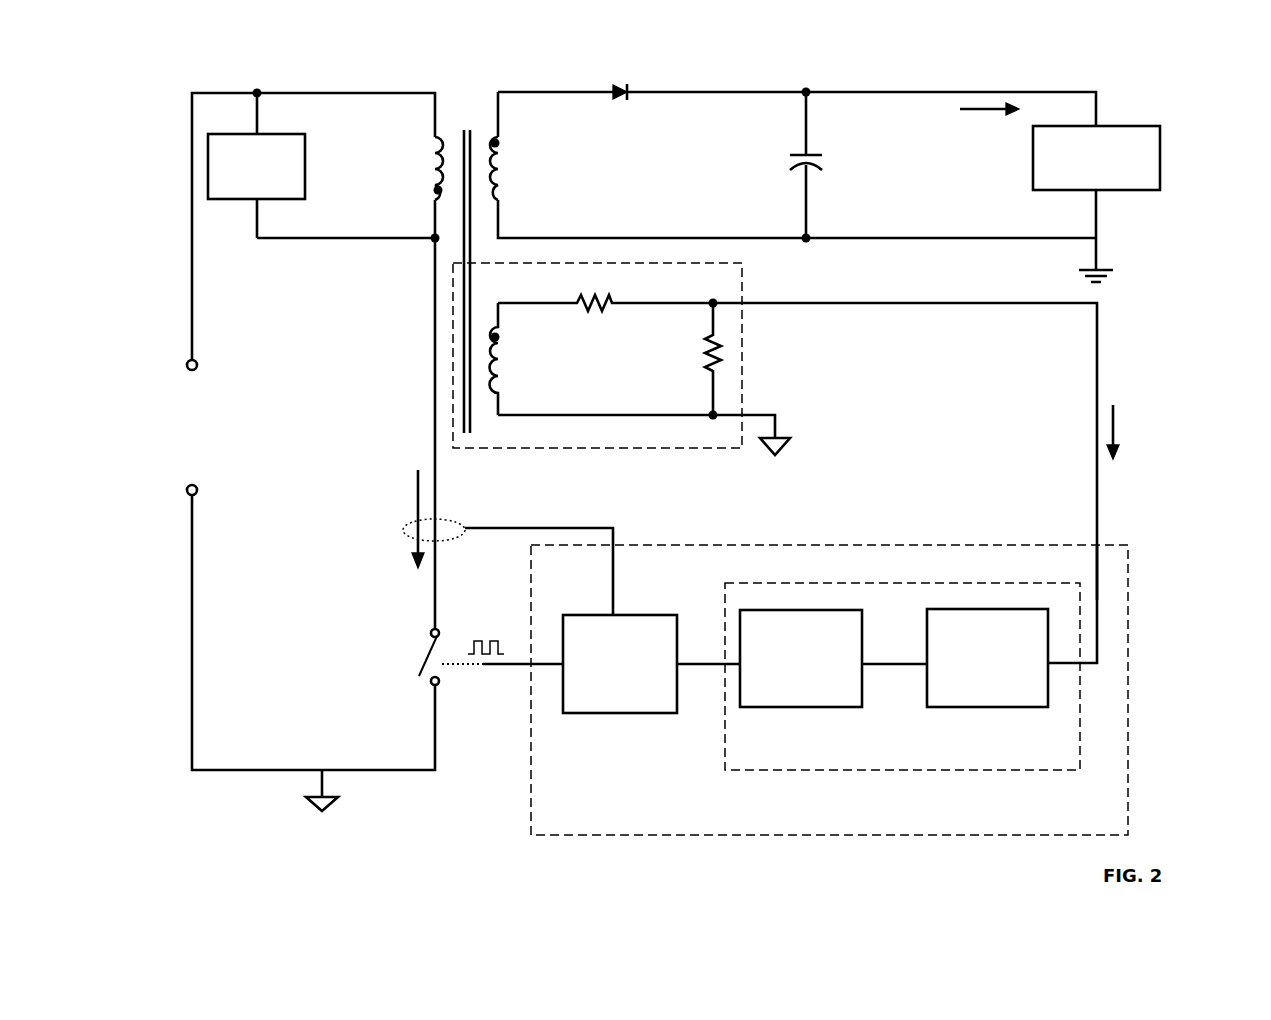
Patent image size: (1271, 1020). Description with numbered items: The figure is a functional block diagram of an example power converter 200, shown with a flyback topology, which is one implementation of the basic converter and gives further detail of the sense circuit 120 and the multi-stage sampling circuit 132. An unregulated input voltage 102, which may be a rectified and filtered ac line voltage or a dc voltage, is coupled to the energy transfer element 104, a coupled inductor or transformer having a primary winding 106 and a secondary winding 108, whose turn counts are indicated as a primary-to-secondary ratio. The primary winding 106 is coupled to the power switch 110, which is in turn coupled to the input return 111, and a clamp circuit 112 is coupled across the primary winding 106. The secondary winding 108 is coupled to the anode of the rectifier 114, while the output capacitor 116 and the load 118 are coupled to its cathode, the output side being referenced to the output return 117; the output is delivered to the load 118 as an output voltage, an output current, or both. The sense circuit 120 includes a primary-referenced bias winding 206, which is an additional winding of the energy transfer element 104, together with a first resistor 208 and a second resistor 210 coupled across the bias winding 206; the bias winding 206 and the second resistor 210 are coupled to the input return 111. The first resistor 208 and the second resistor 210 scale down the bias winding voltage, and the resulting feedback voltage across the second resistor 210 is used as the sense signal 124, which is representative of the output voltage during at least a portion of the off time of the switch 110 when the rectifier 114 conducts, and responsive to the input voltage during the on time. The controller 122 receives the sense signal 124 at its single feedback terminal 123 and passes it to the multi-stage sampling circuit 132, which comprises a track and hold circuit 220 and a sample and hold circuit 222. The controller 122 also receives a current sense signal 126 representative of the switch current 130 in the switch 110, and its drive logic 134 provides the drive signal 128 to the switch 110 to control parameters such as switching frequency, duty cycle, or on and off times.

The power converter 200 is at (141, 72).
The input voltage VIN 102 is at (165, 430).
The clamp circuit 112 is at (208, 163).
The energy transfer element T1 104 is at (467, 93).
The primary winding 106 is at (430, 168).
The secondary winding 108 is at (508, 167).
The bias winding 206 is at (540, 373).
The rectifier D1 114 is at (604, 66).
The output capacitor C1 116 is at (797, 142).
The load 118 is at (1163, 155).
The output return 117 is at (1107, 287).
The sense circuit 120 is at (750, 291).
The resistor R1 208 is at (660, 285).
The resistor R2 210 is at (660, 365).
The input return 111 is at (780, 465).
The switch current ID 130 is at (405, 487).
The current sense signal 126 is at (585, 495).
The switch S1 110 is at (378, 645).
The drive signal 128 is at (465, 730).
The controller 122 is at (547, 845).
The drive logic 134 is at (660, 608).
The multi-stage sampling circuit 132 is at (872, 782).
The sample and hold circuit 222 is at (822, 712).
The track and hold circuit 220 is at (995, 712).
The sense signal USENSE 124 is at (1177, 413).
The feedback terminal 123 is at (1098, 540).